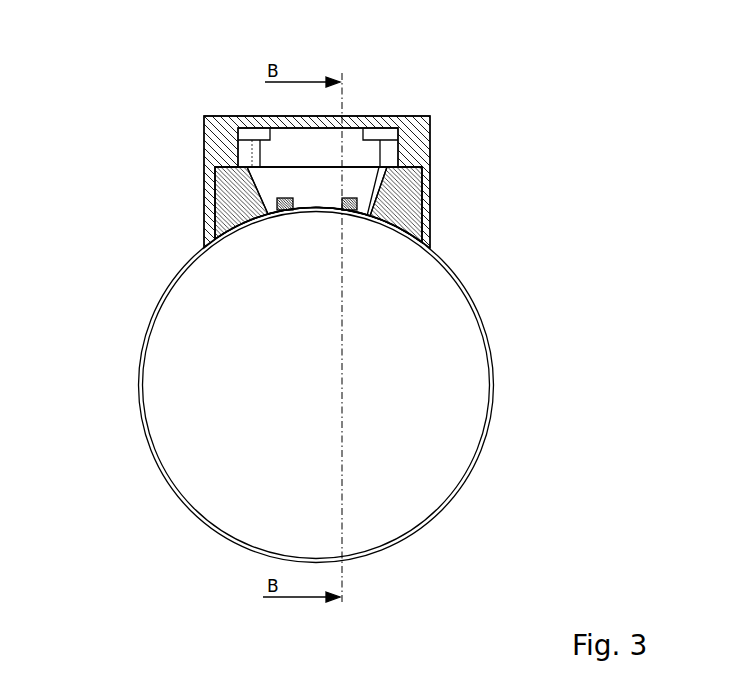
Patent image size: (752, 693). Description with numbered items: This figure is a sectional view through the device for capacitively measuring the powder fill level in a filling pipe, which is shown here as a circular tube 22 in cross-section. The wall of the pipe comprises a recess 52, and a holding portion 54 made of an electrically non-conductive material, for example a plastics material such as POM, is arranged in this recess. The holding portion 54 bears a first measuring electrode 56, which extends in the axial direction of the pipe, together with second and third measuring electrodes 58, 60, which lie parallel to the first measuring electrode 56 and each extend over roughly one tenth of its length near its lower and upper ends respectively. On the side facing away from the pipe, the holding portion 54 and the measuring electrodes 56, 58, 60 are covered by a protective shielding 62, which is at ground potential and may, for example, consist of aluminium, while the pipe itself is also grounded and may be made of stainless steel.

The tube 22 is at (488, 345).
The recess 52 is at (250, 223).
The holding portion 54 is at (407, 202).
The first measuring electrode 56 is at (362, 215).
The second measuring electrode 58 is at (268, 212).
The third measuring electrode 60 is at (268, 212).
The protective shielding 62 is at (417, 132).